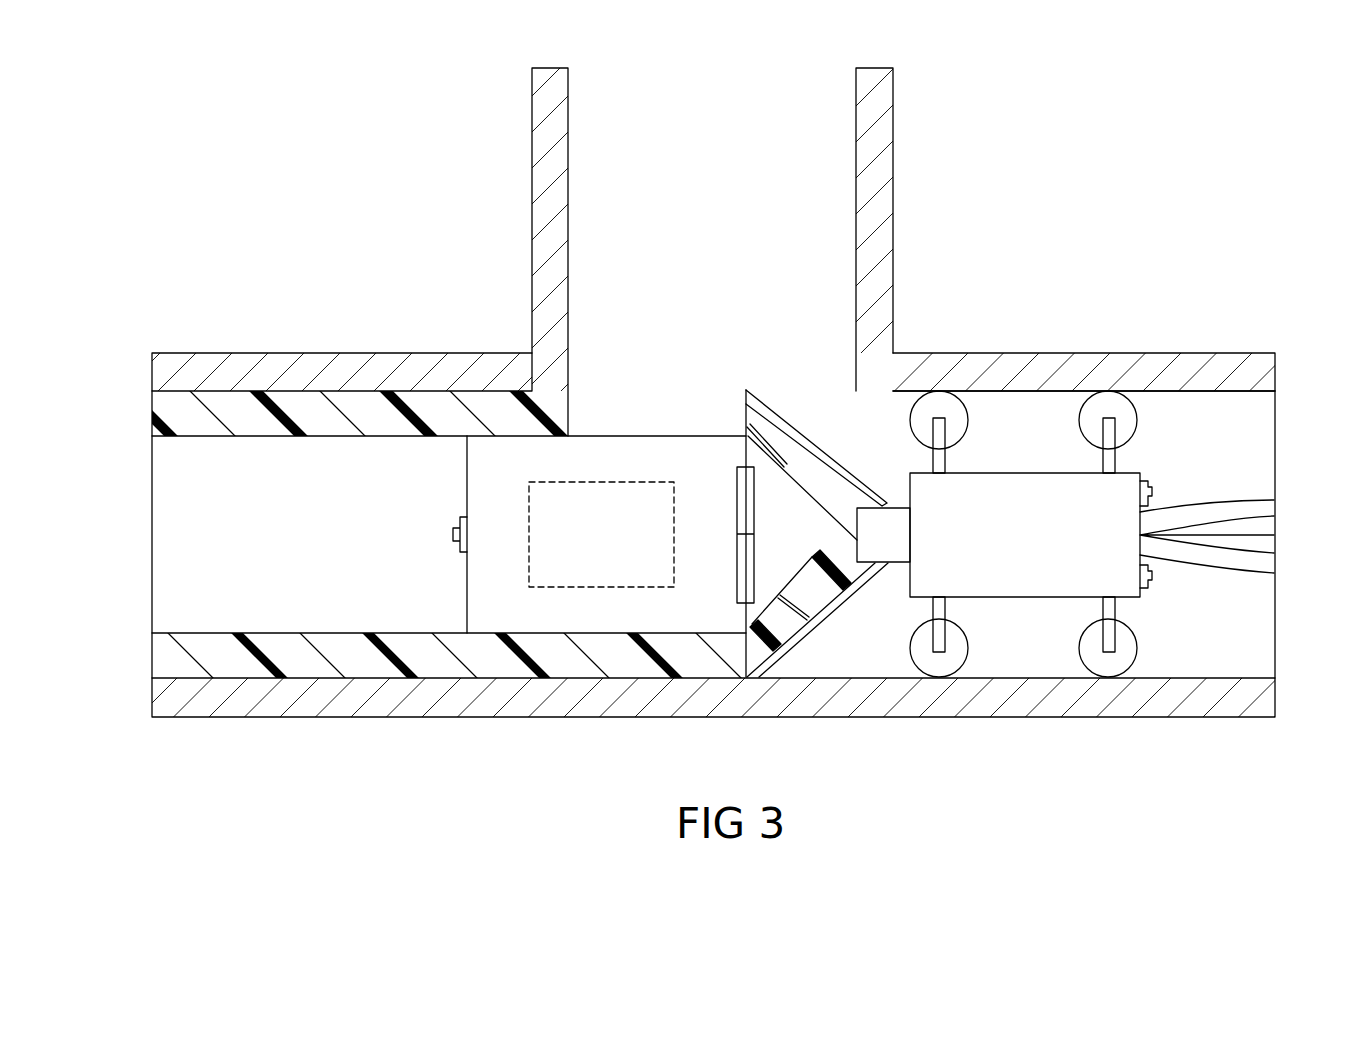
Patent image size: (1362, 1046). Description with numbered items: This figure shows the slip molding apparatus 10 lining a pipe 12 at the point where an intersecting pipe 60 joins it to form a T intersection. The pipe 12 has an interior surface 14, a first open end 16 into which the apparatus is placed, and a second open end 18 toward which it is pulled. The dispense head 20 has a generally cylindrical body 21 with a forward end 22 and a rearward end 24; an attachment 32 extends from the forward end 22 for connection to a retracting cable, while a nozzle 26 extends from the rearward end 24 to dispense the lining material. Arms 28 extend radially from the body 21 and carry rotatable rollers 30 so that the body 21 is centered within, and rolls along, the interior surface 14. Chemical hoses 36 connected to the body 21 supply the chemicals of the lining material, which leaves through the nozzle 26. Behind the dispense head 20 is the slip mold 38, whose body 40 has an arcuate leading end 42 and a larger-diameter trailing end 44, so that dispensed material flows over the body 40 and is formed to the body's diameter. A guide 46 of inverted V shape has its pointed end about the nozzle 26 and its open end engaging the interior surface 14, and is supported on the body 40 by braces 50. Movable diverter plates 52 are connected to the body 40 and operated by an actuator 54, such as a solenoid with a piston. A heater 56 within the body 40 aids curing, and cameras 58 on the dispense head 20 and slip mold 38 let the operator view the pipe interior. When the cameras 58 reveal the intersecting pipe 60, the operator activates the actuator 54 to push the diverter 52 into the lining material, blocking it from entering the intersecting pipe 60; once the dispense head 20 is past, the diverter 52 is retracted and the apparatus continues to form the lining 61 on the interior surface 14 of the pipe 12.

The slip molding apparatus 10 is at (1038, 192).
The pipe 12 is at (1248, 356).
The interior surface 14 is at (1168, 400).
The first open end 16 is at (152, 678).
The second open end 18 is at (1275, 681).
The dispense head 20 is at (1089, 530).
The body 21 is at (945, 500).
The forward end 22 is at (1150, 512).
The rearward end 24 is at (890, 545).
The nozzle 26 is at (920, 588).
The arms 28 is at (945, 460).
The rotatable rollers 30 is at (951, 402).
The attachment 32 is at (1197, 535).
The chemical hoses 36 is at (1245, 505).
The slip mold 38 is at (612, 428).
The body 40 is at (667, 543).
The leading end 42 is at (759, 535).
The trailing end 44 is at (462, 600).
The guide 46 is at (785, 412).
The braces 50 is at (785, 468).
The diverters 52 is at (745, 432).
The actuator 54 is at (745, 500).
The heater 56 is at (540, 482).
The cameras 58 is at (460, 523).
The intersecting pipe 60 is at (893, 103).
The lining 61 is at (368, 667).